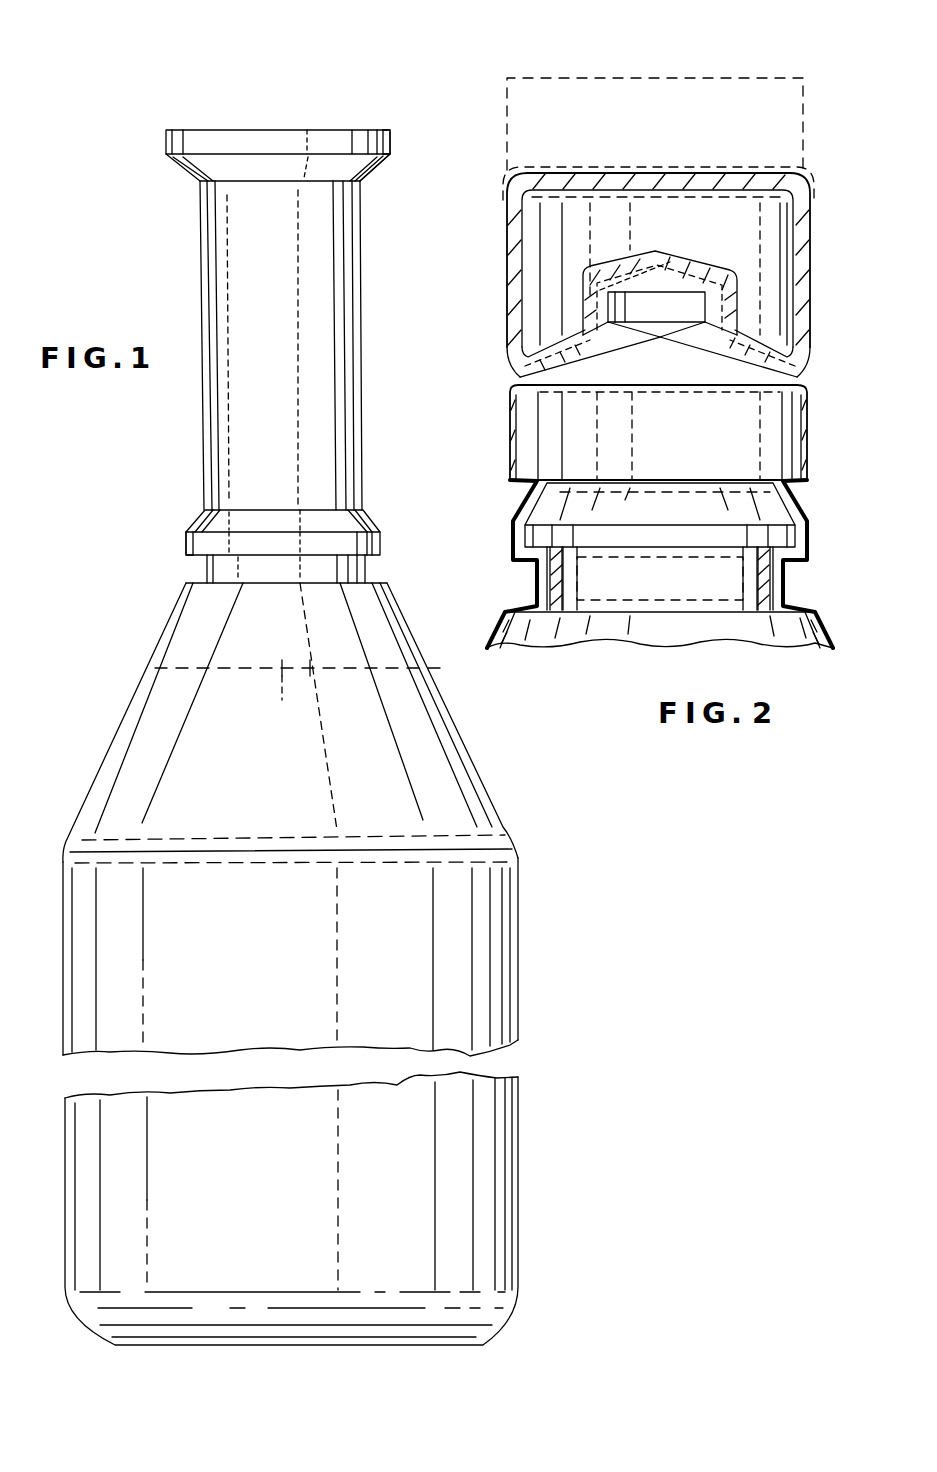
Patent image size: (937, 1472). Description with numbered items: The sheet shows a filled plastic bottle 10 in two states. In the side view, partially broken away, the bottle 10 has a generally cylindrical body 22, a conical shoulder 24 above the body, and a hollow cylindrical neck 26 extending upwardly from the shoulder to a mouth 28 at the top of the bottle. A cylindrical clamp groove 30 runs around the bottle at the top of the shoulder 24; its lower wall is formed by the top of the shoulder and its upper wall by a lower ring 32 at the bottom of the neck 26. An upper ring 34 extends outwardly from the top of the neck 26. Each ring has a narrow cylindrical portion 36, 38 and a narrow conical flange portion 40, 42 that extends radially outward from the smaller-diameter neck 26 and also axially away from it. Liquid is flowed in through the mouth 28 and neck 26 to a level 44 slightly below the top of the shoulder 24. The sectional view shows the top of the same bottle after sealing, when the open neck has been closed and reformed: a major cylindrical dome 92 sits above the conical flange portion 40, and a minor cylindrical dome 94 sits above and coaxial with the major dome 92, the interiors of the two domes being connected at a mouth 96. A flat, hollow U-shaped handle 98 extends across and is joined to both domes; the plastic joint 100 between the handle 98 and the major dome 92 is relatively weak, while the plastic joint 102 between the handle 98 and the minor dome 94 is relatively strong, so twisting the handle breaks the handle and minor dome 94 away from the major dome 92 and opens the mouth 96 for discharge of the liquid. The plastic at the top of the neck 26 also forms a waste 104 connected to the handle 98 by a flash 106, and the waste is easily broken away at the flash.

In FIG. 1, the bottle 10 is at (88, 724).
In FIG. 1, the cylindrical body 22 is at (518, 967).
In FIG. 1, the conical shoulder 24 is at (465, 752).
In FIG. 2, the conical shoulder 24 is at (832, 628).
In FIG. 1, the neck 26 is at (362, 287).
In FIG. 1, the mouth 28 is at (296, 128).
In FIG. 1, the clamp groove 30 is at (205, 569).
In FIG. 2, the clamp groove 30 is at (535, 580).
In FIG. 1, the lower ring 32 is at (184, 542).
In FIG. 1, the upper ring 34 is at (392, 154).
In FIG. 1, the cylindrical portion 36 is at (383, 542).
In FIG. 2, the cylindrical portion 36 is at (812, 541).
In FIG. 1, the cylindrical portion 38 is at (393, 132).
In FIG. 1, the conical flange portion 40 is at (368, 514).
In FIG. 2, the conical flange portion 40 is at (800, 505).
In FIG. 1, the conical flange portion 42 is at (368, 172).
In FIG. 1, the fill level 44 is at (282, 676).
In FIG. 2, the major cylindrical dome 92 is at (812, 423).
In FIG. 2, the minor cylindrical dome 94 is at (723, 307).
In FIG. 2, the mouth 96 is at (663, 340).
In FIG. 2, the handle 98 is at (811, 241).
In FIG. 2, the plastic joint 100 is at (763, 340).
In FIG. 2, the plastic joint 102 is at (690, 272).
In FIG. 2, the waste 104 is at (700, 82).
In FIG. 2, the flash 106 is at (720, 162).